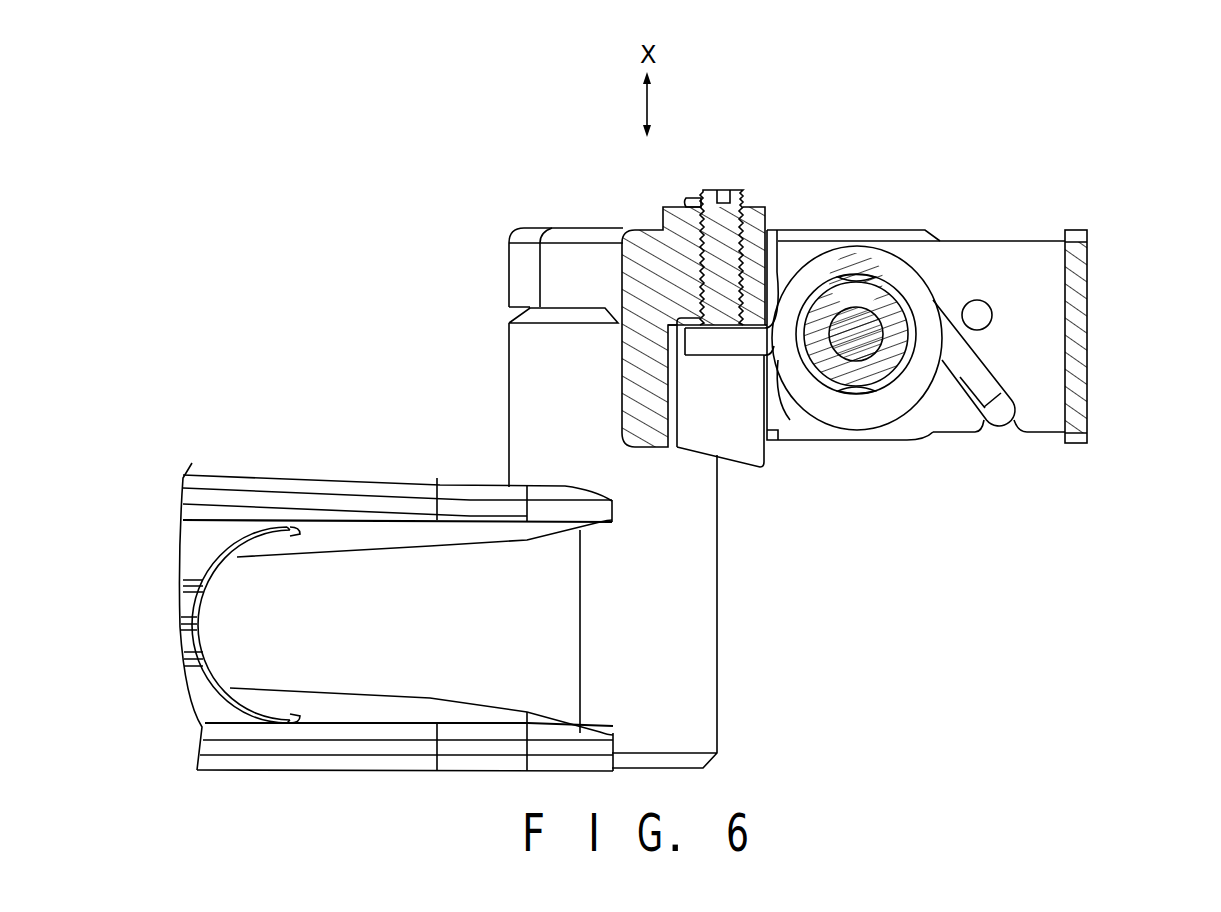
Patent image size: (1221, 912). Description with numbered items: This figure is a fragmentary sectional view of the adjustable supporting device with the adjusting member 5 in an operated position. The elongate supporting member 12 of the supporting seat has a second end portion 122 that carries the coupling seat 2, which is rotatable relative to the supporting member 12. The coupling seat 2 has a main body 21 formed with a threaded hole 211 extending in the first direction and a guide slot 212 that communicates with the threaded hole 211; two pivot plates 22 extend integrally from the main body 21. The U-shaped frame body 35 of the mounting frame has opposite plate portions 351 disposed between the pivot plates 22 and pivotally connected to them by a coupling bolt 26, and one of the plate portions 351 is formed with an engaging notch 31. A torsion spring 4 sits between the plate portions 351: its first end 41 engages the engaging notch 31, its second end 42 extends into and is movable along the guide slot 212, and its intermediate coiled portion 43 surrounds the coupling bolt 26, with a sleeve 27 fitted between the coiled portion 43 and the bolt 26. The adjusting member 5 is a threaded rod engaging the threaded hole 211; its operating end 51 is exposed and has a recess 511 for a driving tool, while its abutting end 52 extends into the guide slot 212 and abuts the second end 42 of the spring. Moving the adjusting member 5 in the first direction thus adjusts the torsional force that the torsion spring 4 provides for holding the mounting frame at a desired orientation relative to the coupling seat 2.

The coupling seat 2 is at (526, 215).
The supporting member 12 is at (290, 478).
The second end portion 122 is at (683, 722).
The main body 21 is at (755, 222).
The threaded hole 211 is at (700, 262).
The guide slot 212 is at (700, 367).
The pivot plates 22 is at (802, 245).
The coupling bolt 26 is at (862, 352).
The sleeve 27 is at (885, 367).
The engaging notch 31 is at (987, 426).
The U-shaped frame body 35 is at (1087, 265).
The plate portions 351 is at (998, 270).
The torsion spring 4 is at (913, 254).
The first end 41 is at (982, 380).
The second end 42 is at (733, 337).
The intermediate coiled portion 43 is at (820, 398).
The adjusting member 5 is at (742, 109).
The operating end 51 is at (730, 190).
The recess 511 is at (718, 200).
The abutting end 52 is at (713, 327).